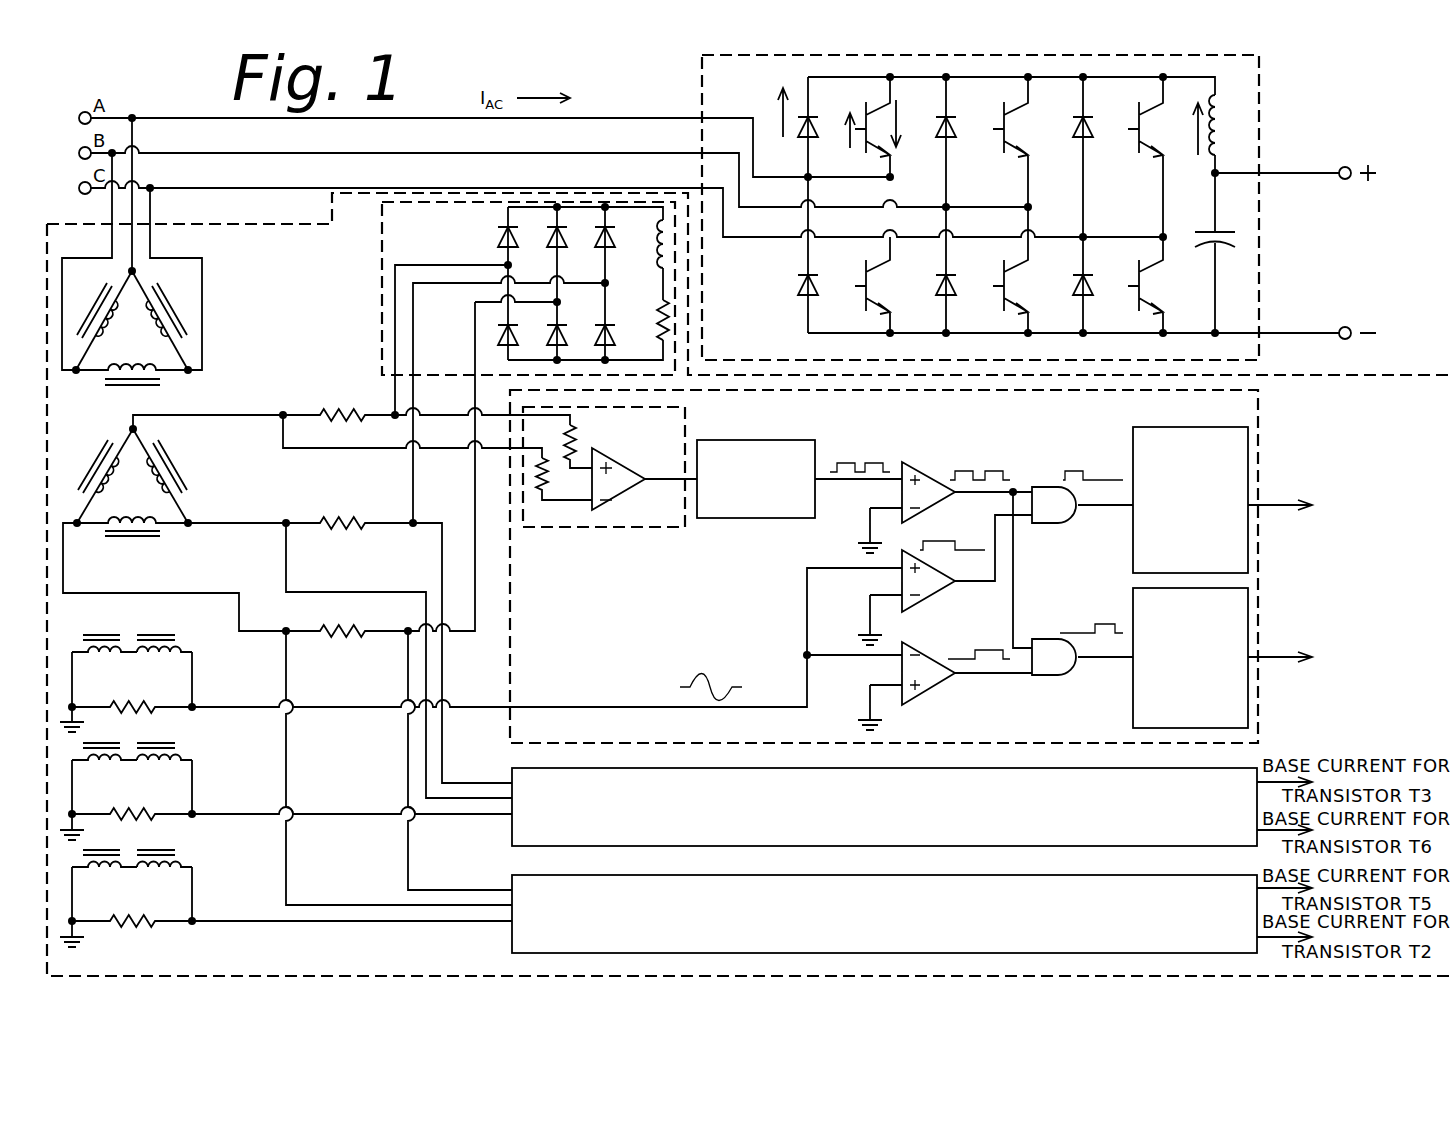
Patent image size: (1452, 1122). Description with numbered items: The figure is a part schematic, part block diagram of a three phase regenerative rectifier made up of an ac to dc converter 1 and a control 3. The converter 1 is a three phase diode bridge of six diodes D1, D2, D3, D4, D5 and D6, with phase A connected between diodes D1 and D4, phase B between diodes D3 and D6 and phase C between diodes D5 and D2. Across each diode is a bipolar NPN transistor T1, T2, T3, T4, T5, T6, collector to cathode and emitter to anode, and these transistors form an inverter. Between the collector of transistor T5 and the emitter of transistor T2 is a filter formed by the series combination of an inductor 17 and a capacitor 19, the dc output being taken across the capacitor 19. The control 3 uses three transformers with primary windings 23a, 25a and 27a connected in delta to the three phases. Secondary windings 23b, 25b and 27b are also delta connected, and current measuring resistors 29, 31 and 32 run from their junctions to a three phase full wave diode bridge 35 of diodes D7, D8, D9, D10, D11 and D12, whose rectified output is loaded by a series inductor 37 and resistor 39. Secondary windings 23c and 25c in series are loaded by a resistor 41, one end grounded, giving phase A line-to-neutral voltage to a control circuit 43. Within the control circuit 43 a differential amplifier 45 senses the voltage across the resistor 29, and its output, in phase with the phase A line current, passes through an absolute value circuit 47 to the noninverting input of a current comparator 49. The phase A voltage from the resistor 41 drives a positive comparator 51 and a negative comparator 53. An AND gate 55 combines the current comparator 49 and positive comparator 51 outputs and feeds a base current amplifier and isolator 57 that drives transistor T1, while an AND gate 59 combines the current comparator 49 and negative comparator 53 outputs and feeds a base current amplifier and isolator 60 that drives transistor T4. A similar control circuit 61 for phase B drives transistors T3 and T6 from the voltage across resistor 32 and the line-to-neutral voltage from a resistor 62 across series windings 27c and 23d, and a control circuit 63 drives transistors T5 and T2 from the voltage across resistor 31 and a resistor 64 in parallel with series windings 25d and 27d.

The ac to dc converter 1 is at (1005, 204).
The control 3 is at (1395, 378).
The inductor 17 is at (1224, 125).
The capacitor 19 is at (1220, 230).
The primary winding 23a is at (98, 300).
The primary winding 25a is at (168, 300).
The primary winding 27a is at (150, 360).
The secondary winding 23b is at (88, 472).
The secondary winding 25b is at (180, 472).
The secondary winding 27b is at (147, 514).
The secondary winding 23c is at (138, 630).
The secondary winding 25c is at (102, 630).
The secondary winding 23d is at (118, 745).
The secondary winding 27c is at (140, 742).
The secondary winding 27d is at (110, 875).
The secondary winding 25d is at (154, 875).
The current measuring resistor 29 is at (348, 406).
The current measuring resistor 31 is at (348, 622).
The current measuring resistor 32 is at (350, 514).
The three phase full wave diode bridge 35 is at (506, 362).
The inductor 37 is at (656, 248).
The resistor 39 is at (656, 322).
The load resistor 41 is at (132, 700).
The control circuit 43 is at (1258, 412).
The differential amplifier 45 is at (685, 420).
The absolute value circuit 47 is at (772, 440).
The current comparator 49 is at (890, 495).
The positive comparator 51 is at (890, 580).
The negative comparator 53 is at (895, 668).
The AND gate 55 is at (1052, 528).
The base current amplifier and isolator 57 is at (1133, 440).
The AND gate 59 is at (1052, 644).
The base current amplifier and isolator 60 is at (1133, 606).
The control circuit 61 is at (512, 772).
The resistor 62 is at (138, 806).
The control circuit 63 is at (512, 880).
The resistor 64 is at (130, 928).
The diode D1 is at (798, 138).
The diode D2 is at (1073, 296).
The diode D3 is at (936, 140).
The diode D4 is at (798, 296).
The diode D5 is at (1073, 140).
The diode D6 is at (936, 296).
The diode D7 is at (498, 243).
The diode D8 is at (595, 335).
The diode D9 is at (547, 244).
The diode D10 is at (498, 338).
The diode D11 is at (595, 244).
The diode D12 is at (547, 335).
The bipolar NPN transistor T1 is at (880, 152).
The bipolar NPN transistor T2 is at (1142, 305).
The bipolar NPN transistor T3 is at (1014, 152).
The bipolar NPN transistor T4 is at (870, 306).
The bipolar NPN transistor T5 is at (1150, 152).
The bipolar NPN transistor T6 is at (1010, 305).